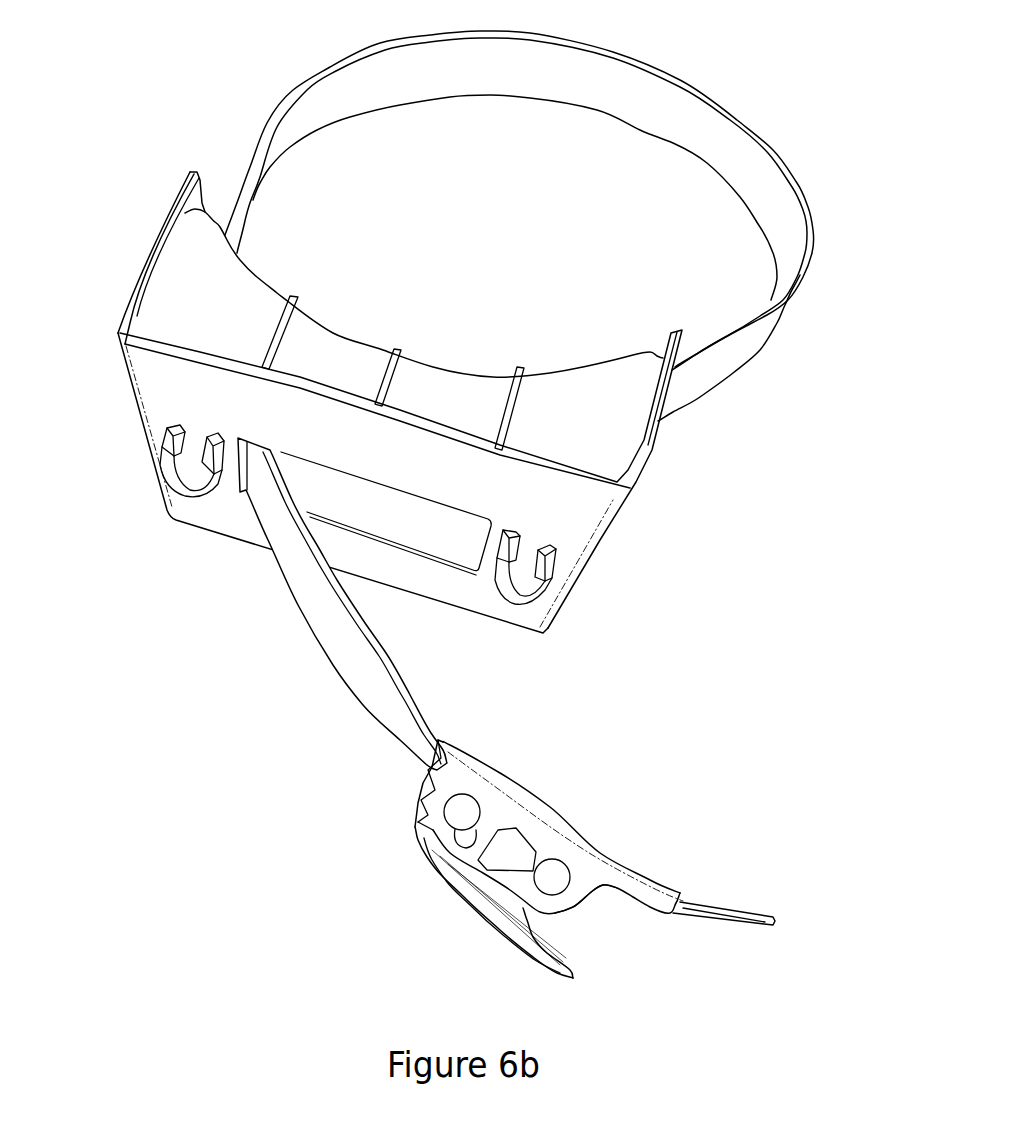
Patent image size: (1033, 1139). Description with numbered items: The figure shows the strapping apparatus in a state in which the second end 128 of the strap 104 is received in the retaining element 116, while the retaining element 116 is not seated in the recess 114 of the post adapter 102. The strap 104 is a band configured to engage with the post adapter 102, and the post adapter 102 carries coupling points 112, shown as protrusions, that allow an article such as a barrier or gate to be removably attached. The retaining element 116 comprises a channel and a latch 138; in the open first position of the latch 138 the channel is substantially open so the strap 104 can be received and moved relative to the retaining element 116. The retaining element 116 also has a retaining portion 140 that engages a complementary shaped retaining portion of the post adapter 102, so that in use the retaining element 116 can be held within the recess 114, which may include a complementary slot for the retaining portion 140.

The strap 104 is at (613, 51).
The post adapter 102 is at (122, 310).
The coupling points 112 is at (180, 476).
The recess 114 is at (373, 512).
The retaining element 116 is at (529, 726).
The latch 138 is at (532, 965).
The retaining portion 140 is at (643, 900).
The second end 128 is at (760, 926).